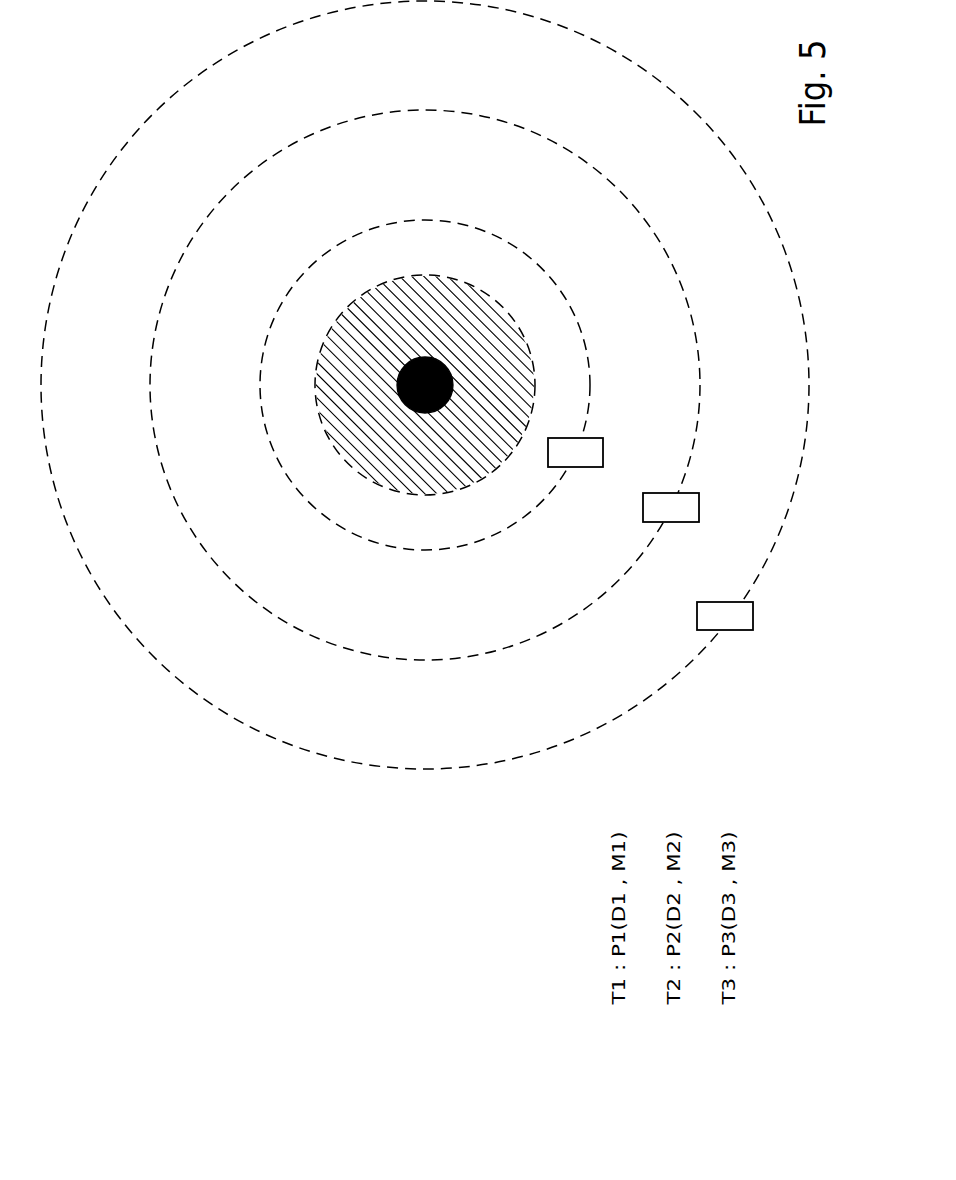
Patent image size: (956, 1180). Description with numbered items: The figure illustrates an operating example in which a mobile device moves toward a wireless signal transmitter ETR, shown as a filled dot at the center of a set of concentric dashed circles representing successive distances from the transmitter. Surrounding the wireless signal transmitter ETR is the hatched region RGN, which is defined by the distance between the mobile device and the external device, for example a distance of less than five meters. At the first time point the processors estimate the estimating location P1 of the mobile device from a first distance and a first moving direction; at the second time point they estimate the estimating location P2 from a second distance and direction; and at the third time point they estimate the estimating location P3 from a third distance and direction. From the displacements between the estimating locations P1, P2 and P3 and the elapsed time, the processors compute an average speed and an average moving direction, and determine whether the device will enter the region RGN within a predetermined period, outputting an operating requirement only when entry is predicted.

The wireless signal transmitter ETR is at (408, 362).
The region RGN is at (347, 462).
The estimating location P1 is at (725, 636).
The estimating location P2 is at (671, 521).
The estimating location P3 is at (575, 472).